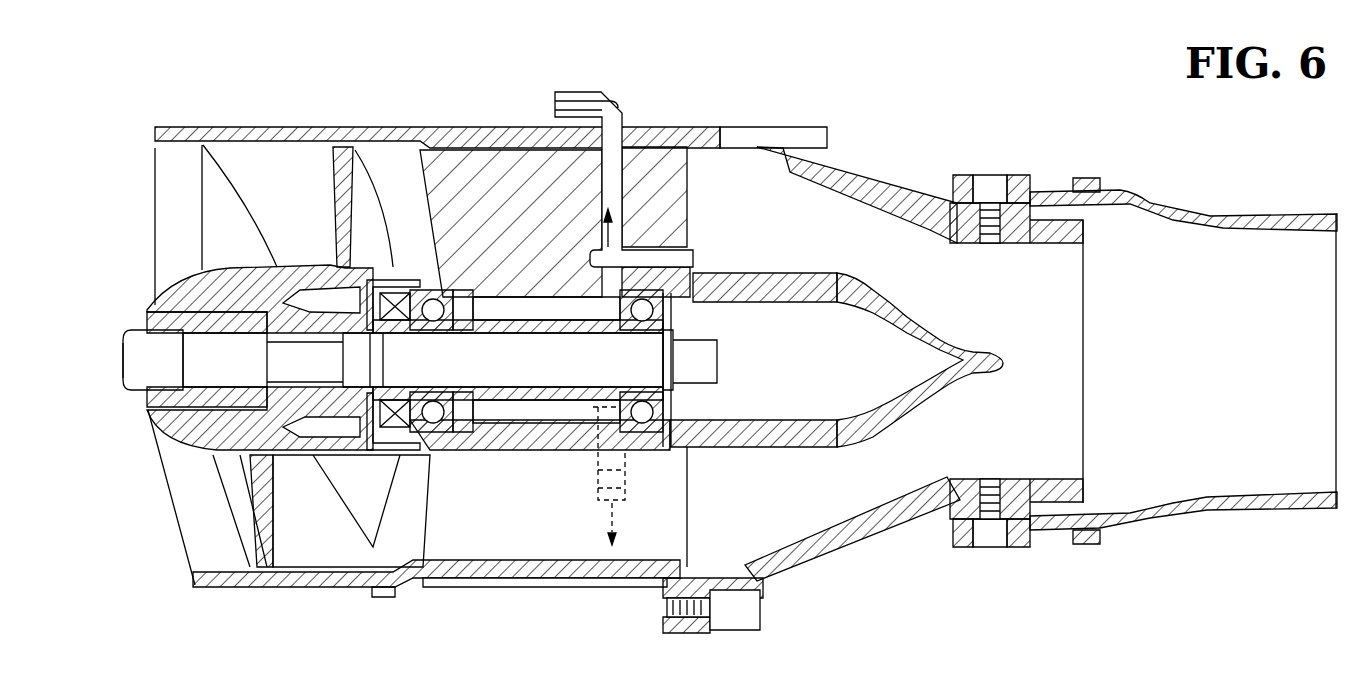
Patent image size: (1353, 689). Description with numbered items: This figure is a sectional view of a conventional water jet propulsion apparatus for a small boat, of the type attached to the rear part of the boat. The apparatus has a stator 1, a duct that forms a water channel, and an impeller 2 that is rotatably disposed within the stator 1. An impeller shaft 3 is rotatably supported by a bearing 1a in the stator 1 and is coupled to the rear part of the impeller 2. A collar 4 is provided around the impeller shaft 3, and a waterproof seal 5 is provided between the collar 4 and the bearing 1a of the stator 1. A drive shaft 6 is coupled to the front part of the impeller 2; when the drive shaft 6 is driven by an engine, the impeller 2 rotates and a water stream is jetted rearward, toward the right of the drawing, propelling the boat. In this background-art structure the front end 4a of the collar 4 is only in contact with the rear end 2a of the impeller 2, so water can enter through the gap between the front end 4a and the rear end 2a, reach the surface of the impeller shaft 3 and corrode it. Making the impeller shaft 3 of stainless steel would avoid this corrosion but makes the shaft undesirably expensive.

The stator 1 is at (290, 588).
The bearing 1a is at (513, 440).
The impeller 2 is at (288, 315).
The rear end of the impeller 2a is at (324, 165).
The impeller shaft 3 is at (640, 367).
The collar 4 is at (380, 392).
The front end of the collar 4a is at (320, 237).
The waterproof seal 5 is at (401, 450).
The drive shaft 6 is at (135, 350).